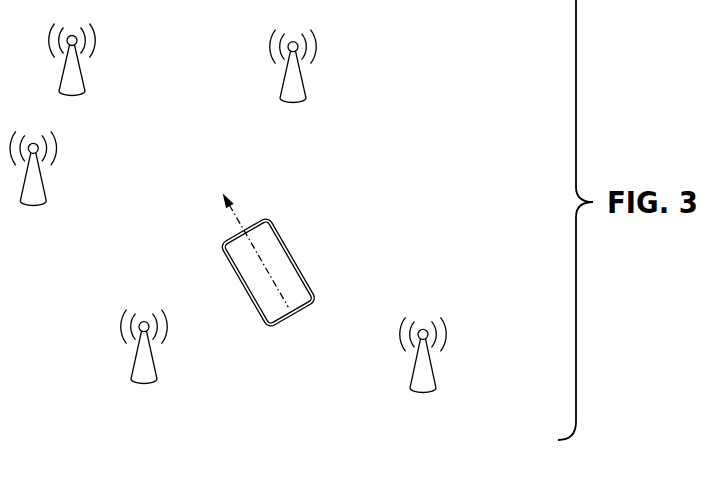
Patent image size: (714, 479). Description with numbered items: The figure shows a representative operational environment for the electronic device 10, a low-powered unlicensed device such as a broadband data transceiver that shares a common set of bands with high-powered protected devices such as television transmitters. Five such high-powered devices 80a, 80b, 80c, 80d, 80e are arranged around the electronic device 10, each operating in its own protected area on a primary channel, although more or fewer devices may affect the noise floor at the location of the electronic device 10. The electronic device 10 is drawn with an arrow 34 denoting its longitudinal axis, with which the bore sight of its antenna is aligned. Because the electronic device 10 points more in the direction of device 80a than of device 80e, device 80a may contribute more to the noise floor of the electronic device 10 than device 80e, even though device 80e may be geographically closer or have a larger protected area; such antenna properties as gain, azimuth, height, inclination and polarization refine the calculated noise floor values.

The high-powered protected device 80a is at (72, 83).
The high-powered protected device 80b is at (292, 83).
The high-powered protected device 80c is at (33, 188).
The high-powered protected device 80d is at (145, 371).
The high-powered protected device 80e is at (422, 373).
The electronic device 10 is at (283, 268).
The arrow 34 is at (232, 207).